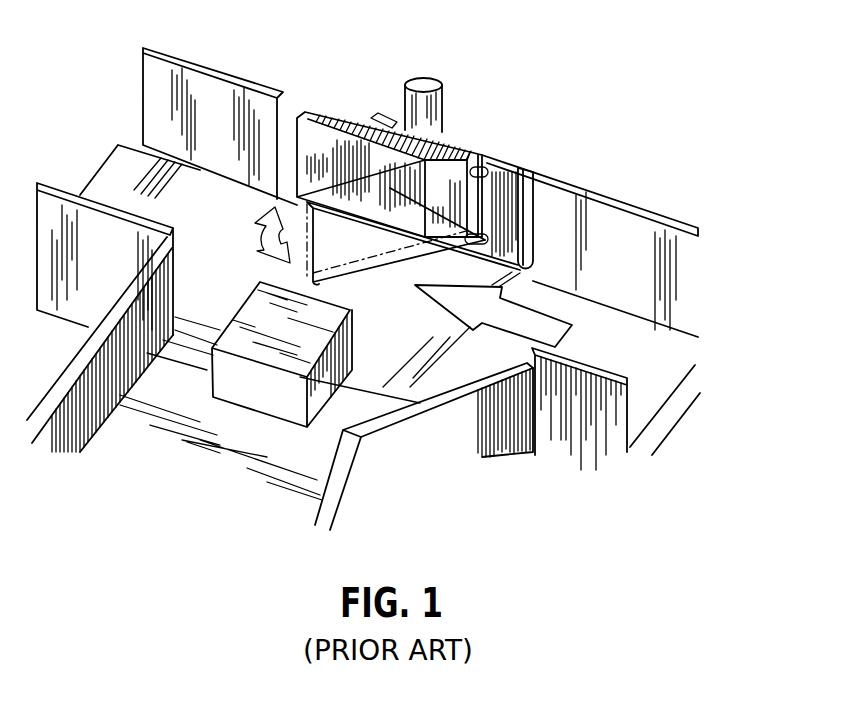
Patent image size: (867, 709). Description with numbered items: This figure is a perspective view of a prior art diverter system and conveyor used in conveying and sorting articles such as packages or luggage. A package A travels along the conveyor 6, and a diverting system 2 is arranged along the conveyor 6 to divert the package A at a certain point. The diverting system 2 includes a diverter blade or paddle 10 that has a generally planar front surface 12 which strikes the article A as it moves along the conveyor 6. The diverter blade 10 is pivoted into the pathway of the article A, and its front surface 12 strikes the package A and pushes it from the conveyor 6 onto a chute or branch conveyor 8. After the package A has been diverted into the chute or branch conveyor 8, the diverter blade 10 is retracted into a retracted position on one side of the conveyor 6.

The diverting system 2 is at (414, 153).
The conveyor 6 is at (655, 372).
The chute or branch conveyor 8 is at (162, 464).
The diverter blade 10 is at (347, 120).
The front surface 12 is at (315, 153).
The package A is at (262, 391).